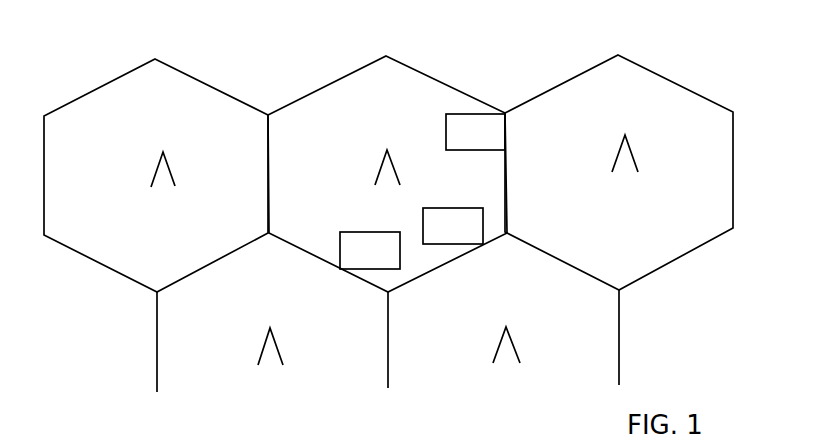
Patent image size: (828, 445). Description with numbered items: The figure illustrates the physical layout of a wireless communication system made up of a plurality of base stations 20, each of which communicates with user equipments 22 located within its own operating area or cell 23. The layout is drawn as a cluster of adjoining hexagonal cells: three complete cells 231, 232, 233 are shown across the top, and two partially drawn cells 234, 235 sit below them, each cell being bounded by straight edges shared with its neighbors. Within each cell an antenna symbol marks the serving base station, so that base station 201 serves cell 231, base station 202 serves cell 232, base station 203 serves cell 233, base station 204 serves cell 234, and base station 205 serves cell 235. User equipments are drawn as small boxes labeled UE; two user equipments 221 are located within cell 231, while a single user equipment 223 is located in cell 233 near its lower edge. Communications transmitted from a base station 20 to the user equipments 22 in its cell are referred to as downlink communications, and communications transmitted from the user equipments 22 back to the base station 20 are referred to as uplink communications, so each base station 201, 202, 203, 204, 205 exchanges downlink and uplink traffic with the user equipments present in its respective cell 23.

The base station 20 is at (415, 251).
The base station 201 is at (408, 170).
The base station 202 is at (645, 156).
The base station 203 is at (183, 171).
The base station 204 is at (292, 348).
The base station 205 is at (527, 346).
The user equipment 22 is at (405, 191).
The user equipment 221 is at (446, 178).
The user equipment 223 is at (353, 244).
The cell 23 is at (388, 223).
The cell 231 is at (387, 174).
The cell 232 is at (619, 220).
The cell 233 is at (156, 175).
The cell 234 is at (176, 342).
The cell 235 is at (410, 340).